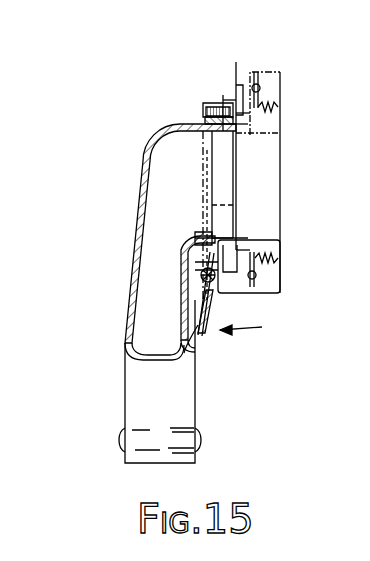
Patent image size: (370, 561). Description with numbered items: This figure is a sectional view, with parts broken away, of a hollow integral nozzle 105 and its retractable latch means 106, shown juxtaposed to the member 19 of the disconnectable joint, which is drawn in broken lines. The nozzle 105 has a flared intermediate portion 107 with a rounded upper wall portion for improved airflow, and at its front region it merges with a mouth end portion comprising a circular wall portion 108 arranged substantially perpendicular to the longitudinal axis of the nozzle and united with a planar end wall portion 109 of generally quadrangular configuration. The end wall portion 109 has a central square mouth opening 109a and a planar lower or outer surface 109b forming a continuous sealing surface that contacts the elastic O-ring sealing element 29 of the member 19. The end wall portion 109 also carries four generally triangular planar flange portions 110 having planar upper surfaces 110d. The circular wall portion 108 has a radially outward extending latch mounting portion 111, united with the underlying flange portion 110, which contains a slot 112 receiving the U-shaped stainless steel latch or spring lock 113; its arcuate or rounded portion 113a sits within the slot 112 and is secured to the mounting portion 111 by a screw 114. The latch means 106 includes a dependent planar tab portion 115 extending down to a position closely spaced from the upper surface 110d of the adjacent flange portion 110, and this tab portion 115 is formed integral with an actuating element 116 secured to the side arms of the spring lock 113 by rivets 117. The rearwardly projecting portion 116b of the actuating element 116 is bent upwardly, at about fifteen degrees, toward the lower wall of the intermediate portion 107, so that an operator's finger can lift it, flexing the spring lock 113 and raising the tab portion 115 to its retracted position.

The member 19 is at (276, 72).
The elastic O-ring sealing element 29 is at (218, 242).
The hollow integral nozzle 105 is at (138, 160).
The retractable latch means 106 is at (260, 327).
The flared intermediate portion 107 is at (138, 243).
The circular wall portion 108 is at (245, 240).
The planar end wall portion 109 is at (204, 245).
The central square mouth opening 109a is at (230, 180).
The planar lower or outer surface 109b is at (240, 127).
The planar flange portions 110 is at (236, 62).
The planar upper surfaces 110d is at (234, 86).
The latch mounting portion 111 is at (206, 118).
The slot 112 is at (245, 124).
The latch or spring lock 113 is at (216, 206).
The arcuate or rounded portion 113a is at (223, 100).
The screw 114 is at (204, 110).
The dependent planar tab portion 115 is at (232, 266).
The actuating element 116 is at (200, 298).
The rearwardly projecting portion 116b is at (182, 353).
The rivets 117 is at (255, 292).